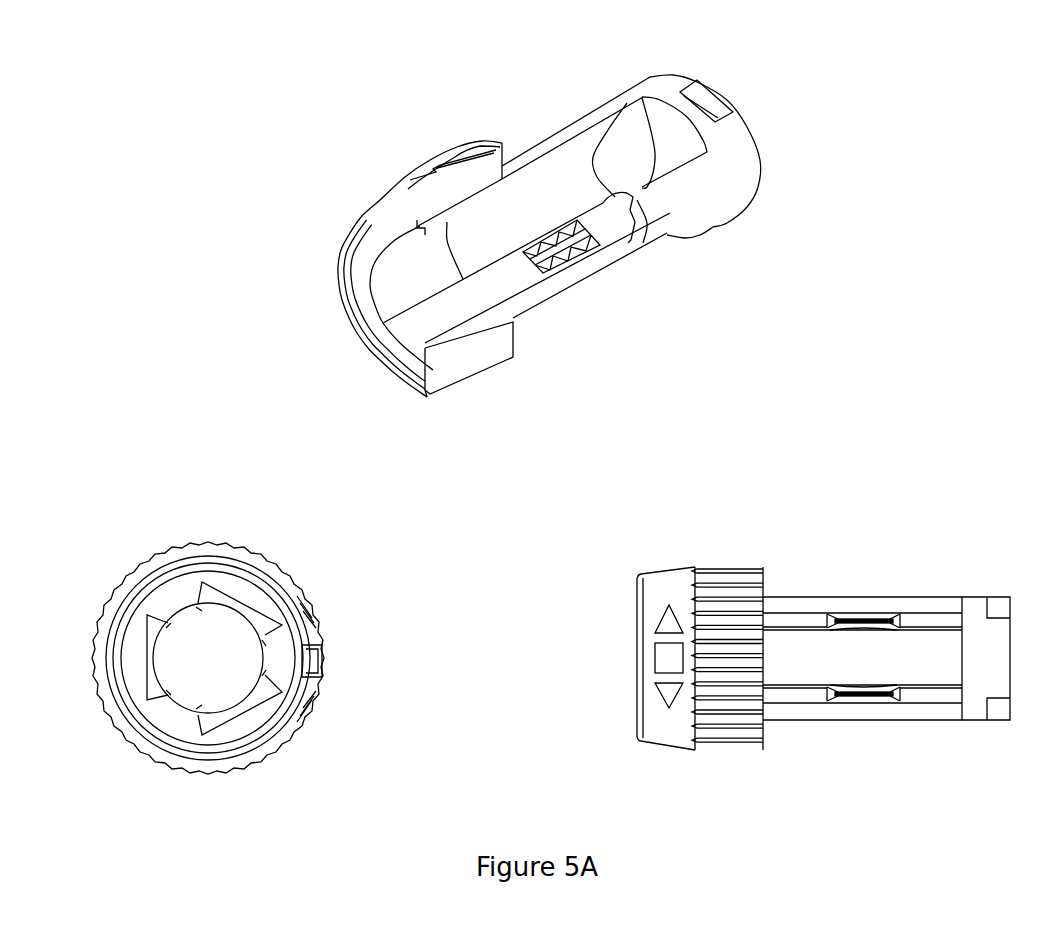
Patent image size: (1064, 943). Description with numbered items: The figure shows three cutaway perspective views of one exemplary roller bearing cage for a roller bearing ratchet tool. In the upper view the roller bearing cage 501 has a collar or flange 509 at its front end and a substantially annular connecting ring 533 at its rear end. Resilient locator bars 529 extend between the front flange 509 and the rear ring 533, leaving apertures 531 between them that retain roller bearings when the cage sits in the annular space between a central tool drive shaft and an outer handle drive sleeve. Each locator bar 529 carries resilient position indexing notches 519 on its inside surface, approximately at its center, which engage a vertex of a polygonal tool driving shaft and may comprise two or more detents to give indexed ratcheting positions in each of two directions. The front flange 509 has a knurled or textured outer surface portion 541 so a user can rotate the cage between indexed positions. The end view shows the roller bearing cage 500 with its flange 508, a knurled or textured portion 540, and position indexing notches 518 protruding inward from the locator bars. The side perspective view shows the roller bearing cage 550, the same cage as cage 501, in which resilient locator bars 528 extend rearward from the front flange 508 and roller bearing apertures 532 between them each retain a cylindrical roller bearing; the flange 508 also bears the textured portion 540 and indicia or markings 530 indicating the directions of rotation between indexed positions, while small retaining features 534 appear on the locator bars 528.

The roller bearing cage 500 is at (427, 609).
The roller bearing cage 501 is at (735, 233).
The front flange 508 is at (176, 745).
The front flange 509 is at (445, 400).
The position indexing notches 518 is at (200, 607).
The resilient position indexing notches 519 is at (585, 247).
The resilient locator bars 528 is at (865, 602).
The resilient locator bars 529 is at (565, 133).
The indicia or other markings 530 is at (650, 657).
The apertures 531 is at (522, 213).
The roller bearing apertures 532 is at (914, 622).
The connecting ring 533 is at (732, 128).
The clip 534 is at (840, 615).
The knurled or textured portion 540 is at (240, 547).
The knurled or otherwise textured outer surface portion 541 is at (438, 165).
The roller bearing cage 550 is at (838, 532).